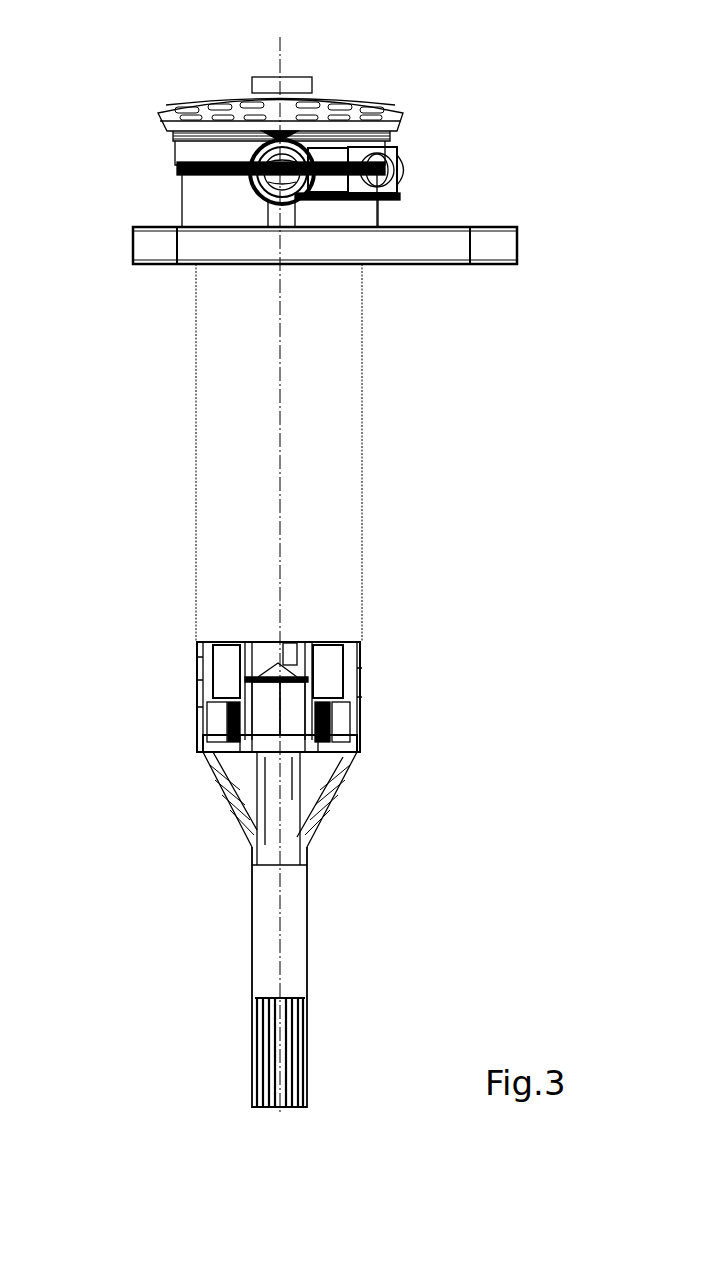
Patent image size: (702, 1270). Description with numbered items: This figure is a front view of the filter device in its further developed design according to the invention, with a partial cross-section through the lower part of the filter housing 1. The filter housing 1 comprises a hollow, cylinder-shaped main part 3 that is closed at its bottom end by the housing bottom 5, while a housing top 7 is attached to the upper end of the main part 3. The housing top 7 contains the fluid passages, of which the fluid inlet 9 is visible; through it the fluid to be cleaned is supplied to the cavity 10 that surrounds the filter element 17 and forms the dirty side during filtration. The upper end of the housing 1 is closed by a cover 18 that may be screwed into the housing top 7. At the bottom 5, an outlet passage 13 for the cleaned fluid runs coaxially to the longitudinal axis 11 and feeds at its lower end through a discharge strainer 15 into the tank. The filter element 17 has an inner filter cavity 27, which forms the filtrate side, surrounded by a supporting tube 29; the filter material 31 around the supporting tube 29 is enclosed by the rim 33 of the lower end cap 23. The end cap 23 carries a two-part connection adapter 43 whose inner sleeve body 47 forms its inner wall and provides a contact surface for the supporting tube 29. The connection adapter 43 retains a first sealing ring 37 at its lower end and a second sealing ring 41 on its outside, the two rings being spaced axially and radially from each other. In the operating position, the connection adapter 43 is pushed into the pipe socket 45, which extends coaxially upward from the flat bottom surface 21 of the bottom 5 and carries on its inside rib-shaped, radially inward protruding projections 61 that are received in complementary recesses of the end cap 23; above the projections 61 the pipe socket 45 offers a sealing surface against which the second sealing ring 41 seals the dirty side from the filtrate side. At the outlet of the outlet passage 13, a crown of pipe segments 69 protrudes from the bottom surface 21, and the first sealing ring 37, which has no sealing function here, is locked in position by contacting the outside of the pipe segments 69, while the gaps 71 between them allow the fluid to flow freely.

The filter housing 1 is at (400, 463).
The main part 3 is at (193, 640).
The housing bottom 5 is at (348, 758).
The housing top 7 is at (192, 153).
The fluid inlet 9 is at (253, 188).
The cavity 10 is at (197, 707).
The longitudinal axis 11 is at (280, 53).
The outlet passage 13 is at (305, 850).
The discharge strainer 15 is at (285, 1053).
The filter element 17 is at (195, 657).
The cover 18 is at (223, 95).
The flat bottom surface 21 is at (197, 737).
The lower end cap 23 is at (362, 697).
The inner filter cavity 27 is at (267, 653).
The supporting tube 29 is at (362, 648).
The filter material 31 is at (325, 655).
The rim 33 is at (197, 680).
The first sealing ring 37 is at (253, 750).
The second sealing ring 41 is at (362, 715).
The connection adapter 43 is at (362, 745).
The pipe socket 45 is at (362, 727).
The inner sleeve body 47 is at (266, 708).
The rib-shaped projections 61 is at (217, 733).
The pipe segments 69 is at (293, 708).
The gaps 71 is at (290, 821).